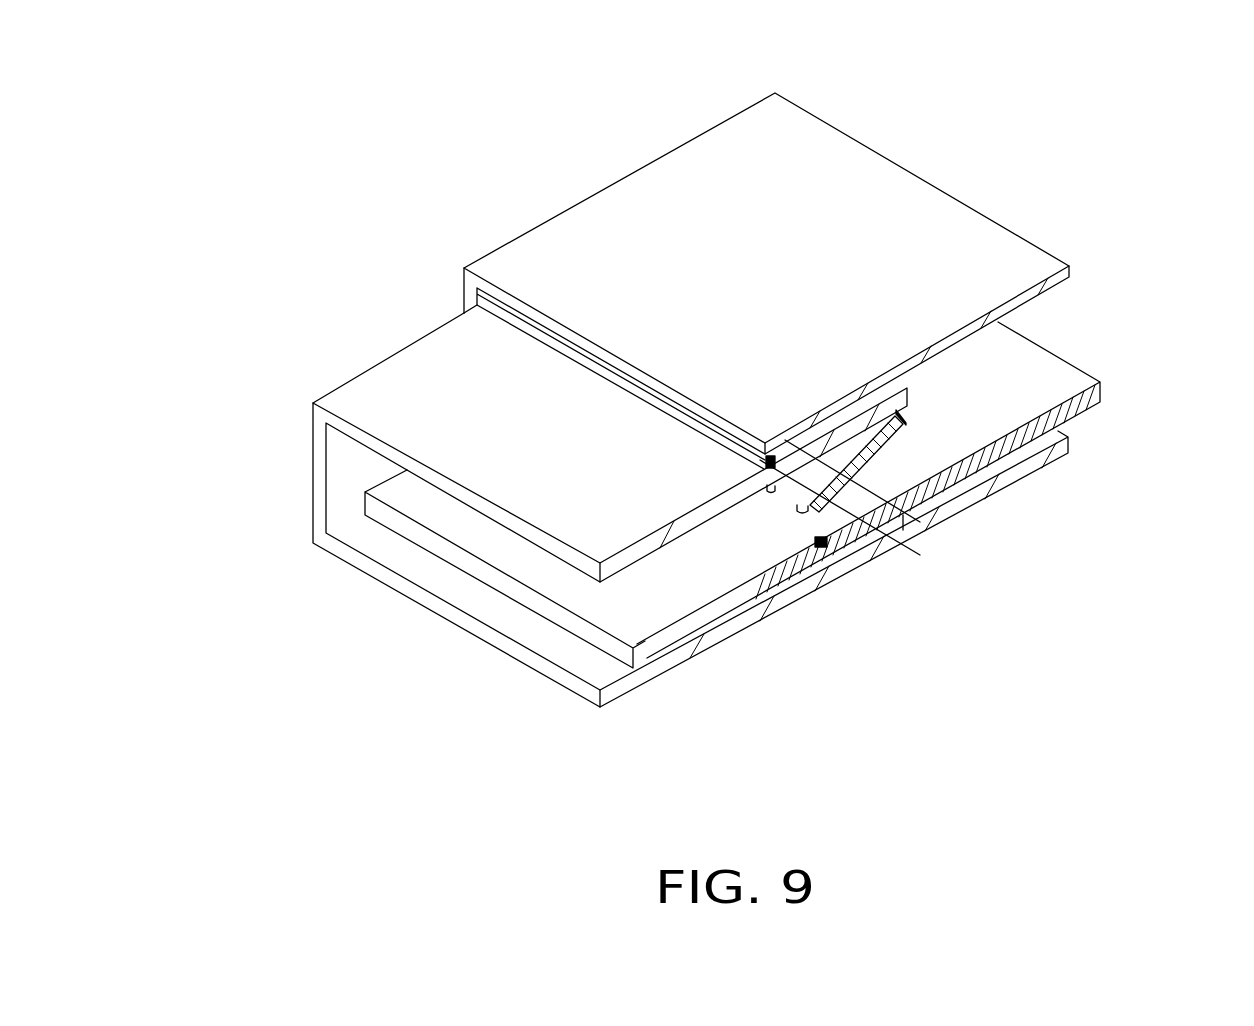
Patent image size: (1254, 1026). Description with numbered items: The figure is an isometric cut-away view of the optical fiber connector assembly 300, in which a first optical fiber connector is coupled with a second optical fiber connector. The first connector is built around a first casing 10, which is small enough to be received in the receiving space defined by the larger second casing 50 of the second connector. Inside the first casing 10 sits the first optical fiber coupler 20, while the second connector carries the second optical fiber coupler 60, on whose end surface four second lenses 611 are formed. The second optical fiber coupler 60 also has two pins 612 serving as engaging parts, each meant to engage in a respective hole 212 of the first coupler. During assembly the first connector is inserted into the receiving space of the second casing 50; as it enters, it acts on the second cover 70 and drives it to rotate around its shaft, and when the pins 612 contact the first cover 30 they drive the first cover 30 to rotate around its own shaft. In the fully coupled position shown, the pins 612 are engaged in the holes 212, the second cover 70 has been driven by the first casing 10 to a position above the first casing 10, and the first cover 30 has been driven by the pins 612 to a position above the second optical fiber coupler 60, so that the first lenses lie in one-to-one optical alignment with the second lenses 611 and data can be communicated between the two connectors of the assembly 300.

The optical fiber connector assembly 300 is at (348, 101).
The first casing 10 is at (433, 372).
The first optical fiber coupler 20 is at (497, 547).
The first cover 30 is at (856, 445).
The second casing 50 is at (882, 222).
The second optical fiber coupler 60 is at (1025, 375).
The second cover 70 is at (787, 450).
The hole 212 is at (840, 522).
The second lens 611 is at (777, 490).
The pin 612 is at (840, 545).